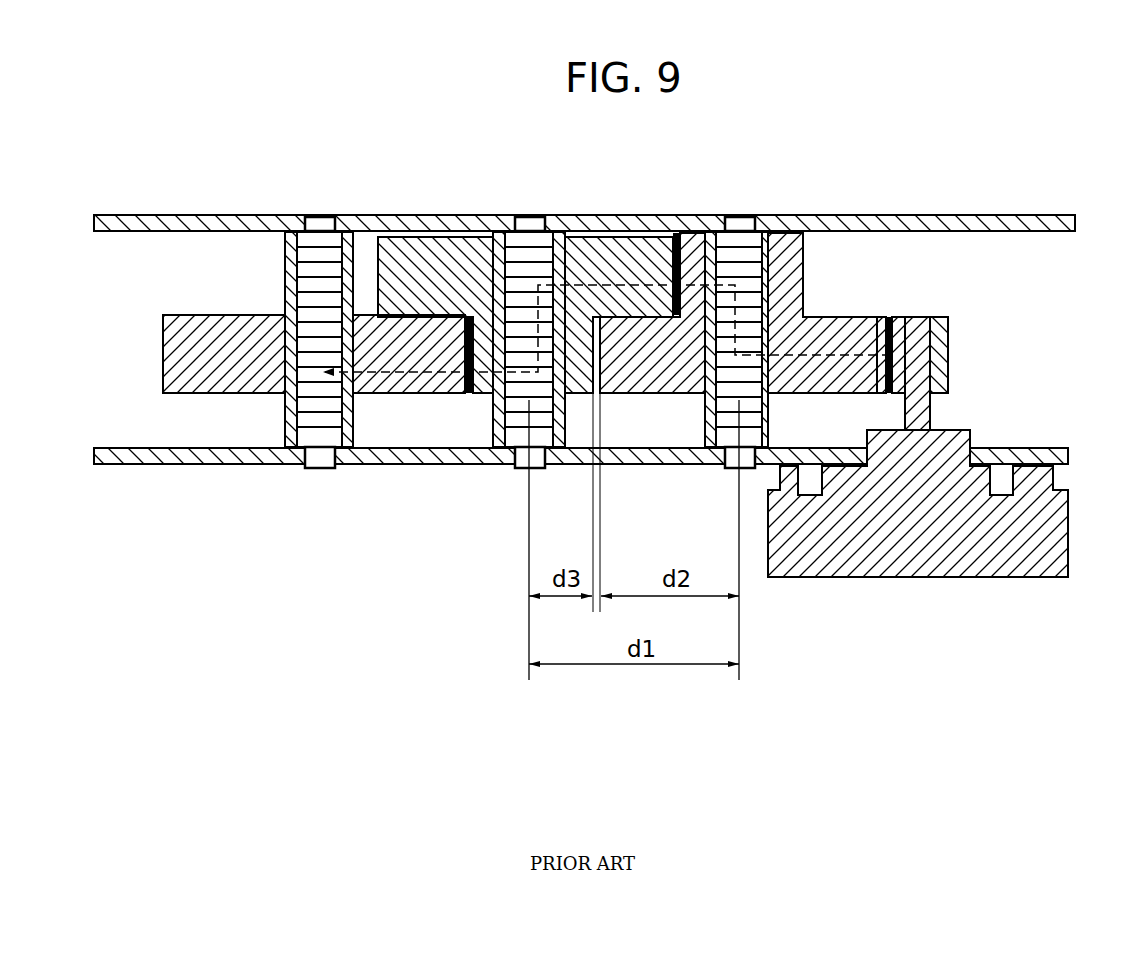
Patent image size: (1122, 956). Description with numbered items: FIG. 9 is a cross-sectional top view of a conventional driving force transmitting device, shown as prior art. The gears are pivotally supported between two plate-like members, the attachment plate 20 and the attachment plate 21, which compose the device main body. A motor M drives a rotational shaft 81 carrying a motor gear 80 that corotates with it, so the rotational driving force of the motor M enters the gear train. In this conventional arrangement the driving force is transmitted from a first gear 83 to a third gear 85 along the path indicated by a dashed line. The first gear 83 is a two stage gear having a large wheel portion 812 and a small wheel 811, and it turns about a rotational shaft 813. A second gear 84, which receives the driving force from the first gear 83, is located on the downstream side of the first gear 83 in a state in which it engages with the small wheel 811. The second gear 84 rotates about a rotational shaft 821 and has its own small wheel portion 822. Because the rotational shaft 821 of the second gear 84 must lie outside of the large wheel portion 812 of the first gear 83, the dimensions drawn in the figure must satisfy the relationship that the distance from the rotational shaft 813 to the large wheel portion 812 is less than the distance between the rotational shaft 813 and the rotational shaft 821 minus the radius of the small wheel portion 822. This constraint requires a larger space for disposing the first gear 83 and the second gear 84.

The attachment plate 20 is at (357, 470).
The attachment plate 21 is at (467, 211).
The motor gear 80 is at (798, 282).
The rotational shaft 81 is at (922, 407).
The first gear 83 is at (790, 260).
The second gear 84 is at (637, 264).
The third gear 85 is at (208, 310).
The small wheel 811 is at (681, 238).
The large wheel portion 812 is at (878, 316).
The rotational shaft 813 is at (728, 468).
The rotational shaft 821 is at (520, 427).
The small wheel portion 822 is at (492, 382).
The motor M is at (1045, 532).